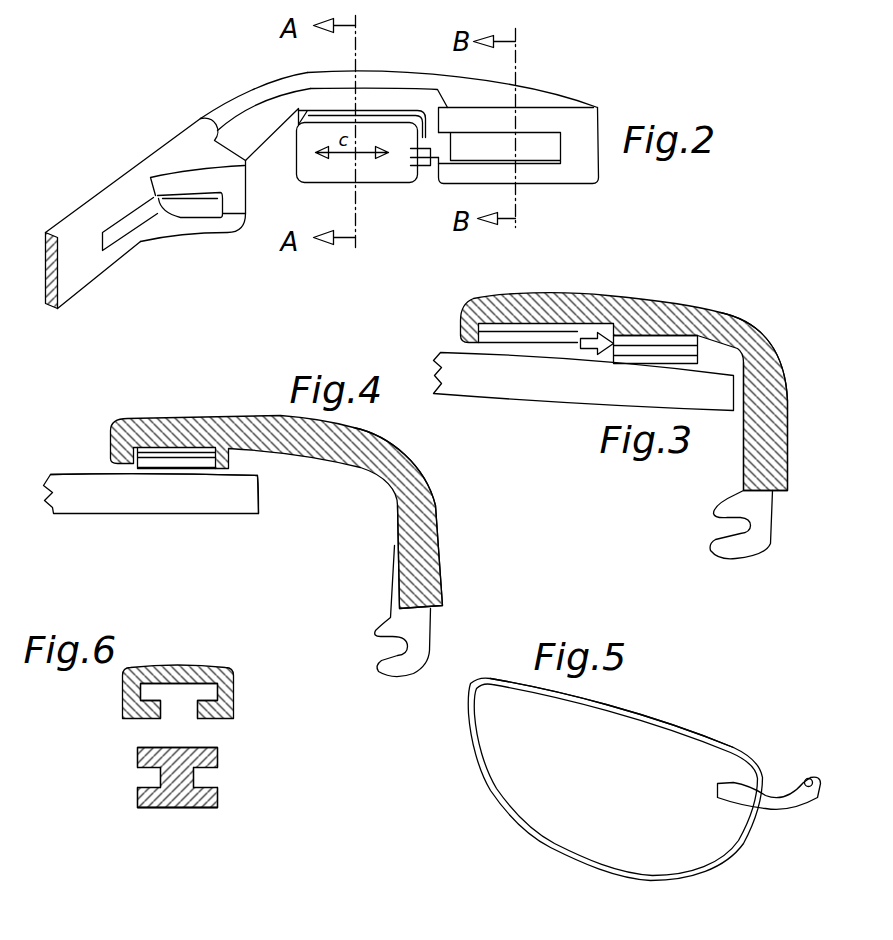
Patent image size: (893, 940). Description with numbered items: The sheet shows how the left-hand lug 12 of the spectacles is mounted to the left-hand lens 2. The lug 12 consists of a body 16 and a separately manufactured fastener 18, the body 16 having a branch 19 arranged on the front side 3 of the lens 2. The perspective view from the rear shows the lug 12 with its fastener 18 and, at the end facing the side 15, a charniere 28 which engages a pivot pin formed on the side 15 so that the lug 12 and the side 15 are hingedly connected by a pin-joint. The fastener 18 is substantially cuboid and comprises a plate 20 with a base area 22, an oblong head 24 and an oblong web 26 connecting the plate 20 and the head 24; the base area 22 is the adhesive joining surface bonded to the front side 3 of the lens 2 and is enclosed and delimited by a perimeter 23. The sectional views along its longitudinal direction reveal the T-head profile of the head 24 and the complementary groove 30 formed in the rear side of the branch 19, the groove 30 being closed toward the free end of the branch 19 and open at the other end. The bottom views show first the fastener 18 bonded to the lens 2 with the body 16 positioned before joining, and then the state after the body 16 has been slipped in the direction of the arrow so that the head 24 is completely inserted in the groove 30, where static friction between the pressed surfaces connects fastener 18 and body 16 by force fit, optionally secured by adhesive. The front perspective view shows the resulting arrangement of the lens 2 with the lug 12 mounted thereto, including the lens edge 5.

In FIG. 3, the lens 2 is at (521, 398).
In FIG. 4, the lens 2 is at (88, 516).
In FIG. 5, the lens 2 is at (517, 795).
In FIG. 4, the front side 3 is at (77, 474).
In FIG. 5, the front side 3 is at (647, 737).
In FIG. 4, the lateral edge of lens 5 is at (267, 490).
In FIG. 2, the lug 12 is at (230, 87).
In FIG. 5, the lug 12 is at (772, 784).
In FIG. 2, the side 15 is at (75, 277).
In FIG. 2, the body 16 is at (305, 97).
In FIG. 3, the body 16 is at (748, 347).
In FIG. 4, the body 16 is at (437, 491).
In FIG. 2, the fastener 18 is at (320, 188).
In FIG. 3, the fastener 18 is at (658, 349).
In FIG. 4, the fastener 18 is at (161, 458).
In FIG. 6, the fastener 18 is at (233, 745).
In FIG. 2, the branch 19 is at (587, 64).
In FIG. 3, the branch 19 is at (577, 303).
In FIG. 4, the branch 19 is at (220, 447).
In FIG. 6, the branch 19 is at (167, 663).
In FIG. 6, the plate 20 is at (210, 792).
In FIG. 2, the base area 22 is at (392, 175).
In FIG. 6, the base area 22 is at (148, 808).
In FIG. 2, the perimeter 23 is at (363, 188).
In FIG. 6, the head 24 is at (163, 757).
In FIG. 6, the web 26 is at (193, 770).
In FIG. 2, the charniere 28 is at (192, 208).
In FIG. 3, the charniere 28 is at (713, 540).
In FIG. 2, the groove 30 is at (538, 153).
In FIG. 3, the groove 30 is at (505, 328).
In FIG. 6, the groove 30 is at (177, 697).